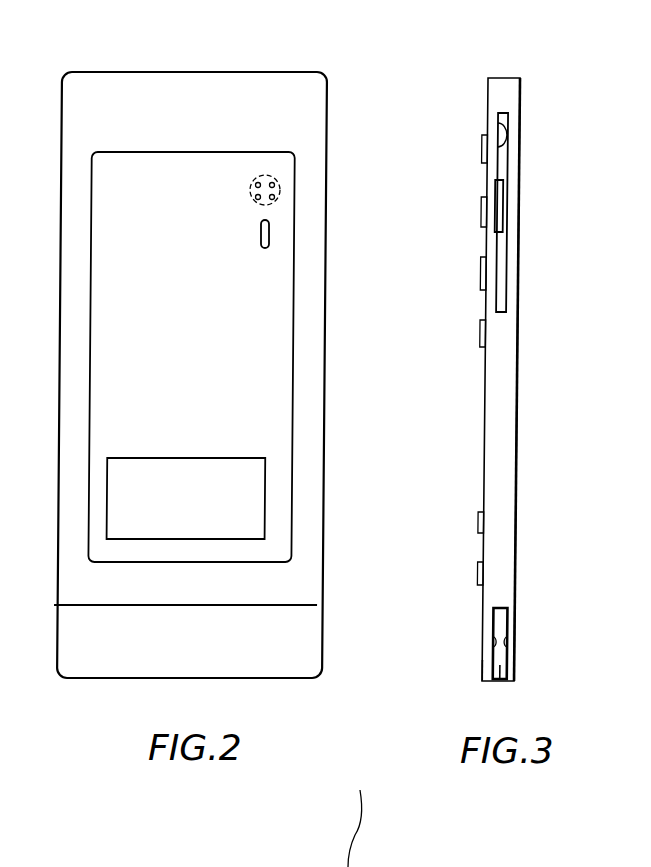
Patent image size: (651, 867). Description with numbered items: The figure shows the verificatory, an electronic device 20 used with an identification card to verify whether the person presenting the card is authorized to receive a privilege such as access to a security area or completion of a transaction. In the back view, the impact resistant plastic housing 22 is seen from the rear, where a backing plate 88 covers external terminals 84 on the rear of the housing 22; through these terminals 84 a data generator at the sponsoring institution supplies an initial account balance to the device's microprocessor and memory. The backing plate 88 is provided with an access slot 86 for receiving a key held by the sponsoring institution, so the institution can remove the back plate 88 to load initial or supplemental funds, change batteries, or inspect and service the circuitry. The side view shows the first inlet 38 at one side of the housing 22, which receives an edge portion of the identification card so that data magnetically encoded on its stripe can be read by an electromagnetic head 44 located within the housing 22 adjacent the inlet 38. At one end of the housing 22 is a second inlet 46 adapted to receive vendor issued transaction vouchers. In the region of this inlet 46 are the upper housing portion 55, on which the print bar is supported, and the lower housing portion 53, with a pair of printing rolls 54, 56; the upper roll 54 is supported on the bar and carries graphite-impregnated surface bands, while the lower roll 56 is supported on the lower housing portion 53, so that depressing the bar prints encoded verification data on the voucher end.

In FIG. 2, the electronic device (verificatory) 20 is at (330, 295).
In FIG. 3, the electronic device (verificatory) 20 is at (520, 472).
In FIG. 2, the housing 22 is at (211, 107).
In FIG. 2, the external terminals 84 is at (266, 176).
In FIG. 2, the access slot 86 is at (261, 233).
In FIG. 2, the backing plate 88 is at (262, 389).
In FIG. 3, the first inlet 38 is at (506, 145).
In FIG. 3, the electromagnetic head 44 is at (497, 188).
In FIG. 3, the second inlet 46 is at (500, 676).
In FIG. 3, the lower housing portion 53 is at (514, 668).
In FIG. 3, the upper printing roll 54 is at (493, 640).
In FIG. 3, the upper housing portion 55 is at (482, 670).
In FIG. 3, the lower printing roll 56 is at (508, 641).